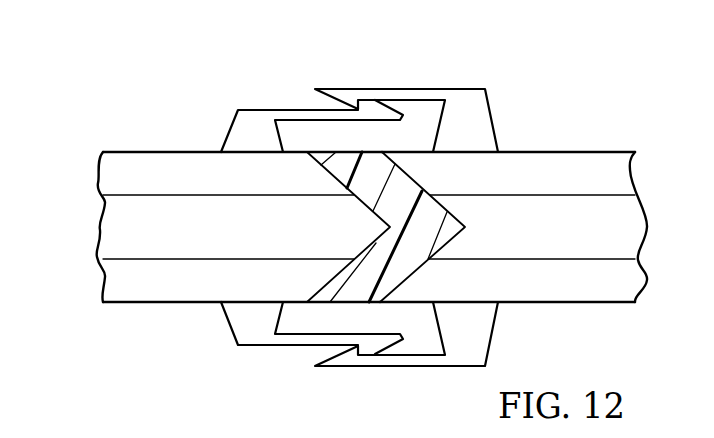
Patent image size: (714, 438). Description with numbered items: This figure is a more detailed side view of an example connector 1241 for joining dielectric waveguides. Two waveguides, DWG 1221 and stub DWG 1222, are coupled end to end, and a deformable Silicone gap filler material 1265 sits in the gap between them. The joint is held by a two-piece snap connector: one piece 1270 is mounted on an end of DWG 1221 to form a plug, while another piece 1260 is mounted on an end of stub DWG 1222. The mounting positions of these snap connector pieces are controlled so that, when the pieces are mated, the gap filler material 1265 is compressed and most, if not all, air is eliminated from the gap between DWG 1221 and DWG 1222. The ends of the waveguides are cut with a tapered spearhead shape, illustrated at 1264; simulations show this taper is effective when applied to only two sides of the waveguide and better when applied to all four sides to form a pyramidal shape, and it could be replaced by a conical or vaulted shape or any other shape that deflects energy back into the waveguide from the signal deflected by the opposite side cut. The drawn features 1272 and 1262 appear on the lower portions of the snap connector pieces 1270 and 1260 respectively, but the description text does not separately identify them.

The connector 1241 is at (87, 74).
The DWG 1221 is at (145, 153).
The stub DWG 1222 is at (592, 152).
The Silicone gap filler material 1265 is at (330, 158).
The spearhead shape 1264 is at (407, 167).
The snap connector piece 1270 is at (228, 323).
The first clamp hook portion 1272 is at (297, 347).
The snap connector piece 1260 is at (380, 245).
The second clamp hook portion 1262 is at (402, 367).